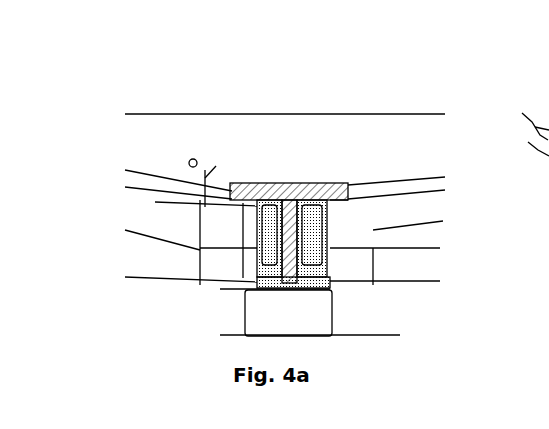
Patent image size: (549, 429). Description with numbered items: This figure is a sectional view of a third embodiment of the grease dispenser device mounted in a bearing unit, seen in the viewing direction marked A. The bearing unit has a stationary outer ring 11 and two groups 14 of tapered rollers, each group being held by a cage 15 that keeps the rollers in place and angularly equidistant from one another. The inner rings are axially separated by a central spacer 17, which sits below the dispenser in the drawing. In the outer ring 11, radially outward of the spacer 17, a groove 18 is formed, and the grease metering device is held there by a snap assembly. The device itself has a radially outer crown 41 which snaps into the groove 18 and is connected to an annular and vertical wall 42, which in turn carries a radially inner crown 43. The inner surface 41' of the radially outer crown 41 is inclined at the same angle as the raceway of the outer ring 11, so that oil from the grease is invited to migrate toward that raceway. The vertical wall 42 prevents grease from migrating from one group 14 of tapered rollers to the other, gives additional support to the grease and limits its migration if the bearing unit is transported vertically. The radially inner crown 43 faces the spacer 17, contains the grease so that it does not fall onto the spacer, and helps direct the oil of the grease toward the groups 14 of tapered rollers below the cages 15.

The stationary outer ring 11 is at (175, 132).
The group of tapered rollers 14 is at (114, 230).
The cage 15 is at (402, 218).
The spacer 17 is at (288, 308).
The groove 18 is at (287, 178).
The radially outer crown 41 is at (322, 172).
The inner surface 41' is at (403, 255).
The annular and vertical wall 42 is at (283, 245).
The radially inner crown 43 is at (322, 282).
The viewing direction A is at (530, 255).